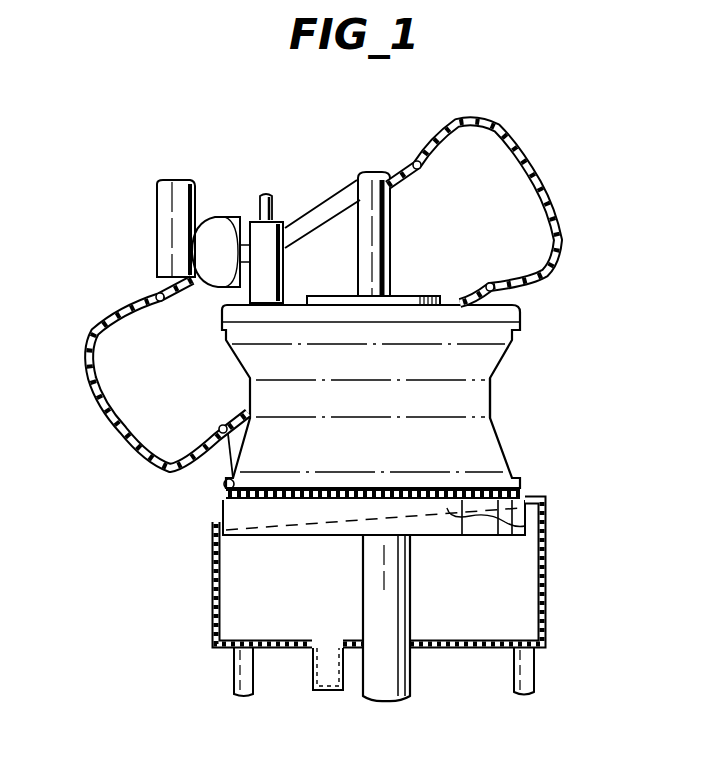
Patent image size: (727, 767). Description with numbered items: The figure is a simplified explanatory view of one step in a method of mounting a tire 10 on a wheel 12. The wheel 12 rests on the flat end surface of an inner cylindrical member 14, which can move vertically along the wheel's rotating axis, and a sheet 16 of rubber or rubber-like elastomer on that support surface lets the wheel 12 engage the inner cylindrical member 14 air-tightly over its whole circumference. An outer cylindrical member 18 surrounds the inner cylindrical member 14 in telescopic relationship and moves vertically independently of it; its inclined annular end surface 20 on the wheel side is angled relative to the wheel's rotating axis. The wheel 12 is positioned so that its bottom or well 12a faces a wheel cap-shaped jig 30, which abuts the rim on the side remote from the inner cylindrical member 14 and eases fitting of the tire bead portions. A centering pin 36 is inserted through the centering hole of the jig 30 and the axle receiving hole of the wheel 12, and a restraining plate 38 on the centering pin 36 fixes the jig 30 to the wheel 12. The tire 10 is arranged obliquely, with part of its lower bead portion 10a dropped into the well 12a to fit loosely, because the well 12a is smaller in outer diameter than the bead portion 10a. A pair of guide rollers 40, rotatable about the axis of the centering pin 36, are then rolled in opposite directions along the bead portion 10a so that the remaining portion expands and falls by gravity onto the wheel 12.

The tire 10 is at (108, 411).
The bead portion 10a is at (228, 425).
The wheel 12 is at (508, 456).
The well 12a is at (492, 398).
The inner cylindrical member 14 is at (223, 513).
The sheet 16 is at (226, 485).
The outer cylindrical member 18 is at (546, 604).
The inclined annular end surface 20 is at (545, 525).
The wheel cap-shaped jig 30 is at (520, 305).
The centering pin 36 is at (395, 210).
The restraining plate 38 is at (440, 300).
The guide rollers 40 is at (252, 225).